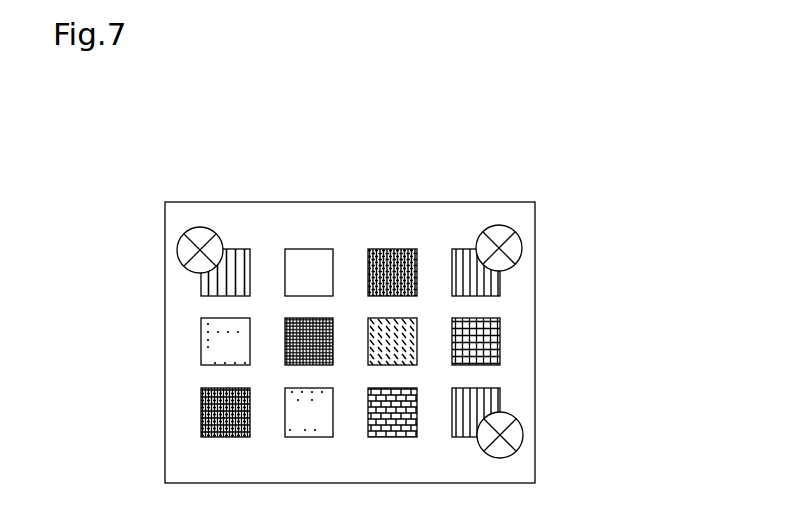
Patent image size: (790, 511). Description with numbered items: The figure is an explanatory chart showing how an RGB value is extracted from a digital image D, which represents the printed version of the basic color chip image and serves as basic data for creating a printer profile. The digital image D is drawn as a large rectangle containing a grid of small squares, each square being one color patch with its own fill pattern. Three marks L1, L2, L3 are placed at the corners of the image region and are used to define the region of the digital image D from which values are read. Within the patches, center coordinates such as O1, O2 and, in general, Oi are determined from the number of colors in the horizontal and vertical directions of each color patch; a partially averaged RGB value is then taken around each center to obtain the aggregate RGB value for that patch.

The digital image D is at (414, 202).
The region defining point L1 is at (194, 228).
The region defining point L2 is at (505, 227).
The region defining point L3 is at (518, 427).
The center coordinate O1 is at (224, 272).
The center coordinate O2 is at (308, 272).
The center coordinate Oi is at (392, 342).